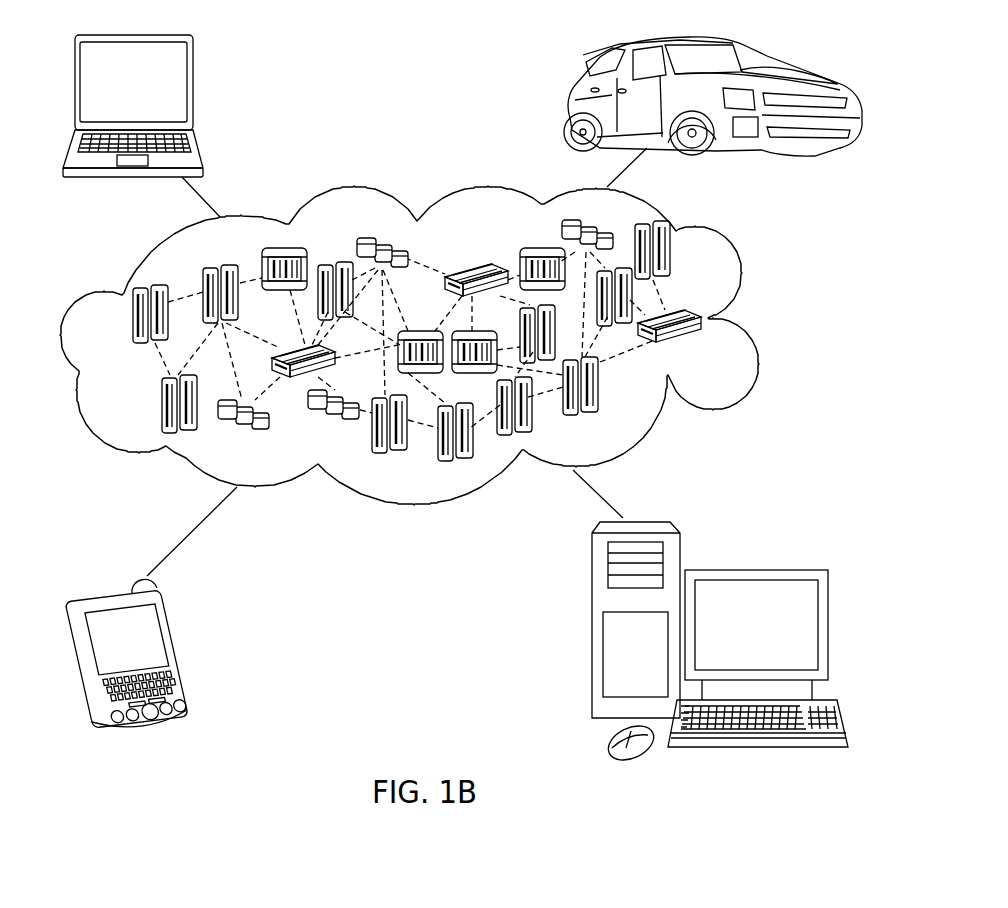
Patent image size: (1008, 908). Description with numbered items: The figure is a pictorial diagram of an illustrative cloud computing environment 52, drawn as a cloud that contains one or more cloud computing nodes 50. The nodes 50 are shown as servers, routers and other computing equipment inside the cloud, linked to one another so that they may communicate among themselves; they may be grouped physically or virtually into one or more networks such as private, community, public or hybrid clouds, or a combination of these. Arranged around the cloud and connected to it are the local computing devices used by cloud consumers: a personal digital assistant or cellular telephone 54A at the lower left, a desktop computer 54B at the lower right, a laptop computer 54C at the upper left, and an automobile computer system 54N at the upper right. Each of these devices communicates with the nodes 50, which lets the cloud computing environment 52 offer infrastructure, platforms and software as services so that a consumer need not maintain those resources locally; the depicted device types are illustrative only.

The cloud computing node 50 is at (461, 401).
The cloud computing environment 52 is at (760, 325).
The personal digital assistant (PDA) or cellular telephone 54A is at (184, 653).
The desktop computer 54B is at (753, 571).
The laptop computer 54C is at (191, 91).
The automobile computer system 54N is at (566, 100).